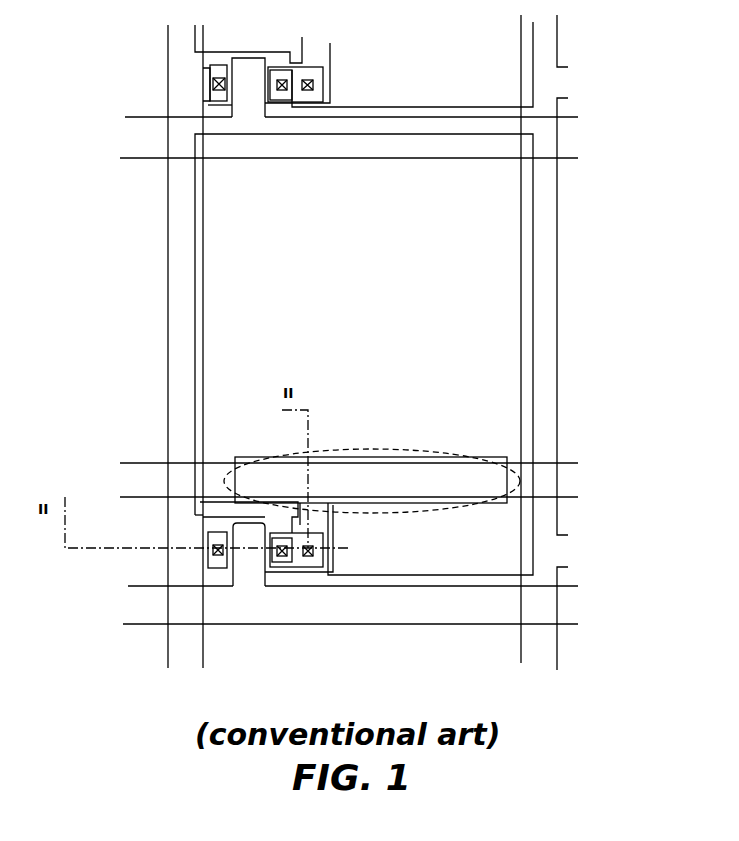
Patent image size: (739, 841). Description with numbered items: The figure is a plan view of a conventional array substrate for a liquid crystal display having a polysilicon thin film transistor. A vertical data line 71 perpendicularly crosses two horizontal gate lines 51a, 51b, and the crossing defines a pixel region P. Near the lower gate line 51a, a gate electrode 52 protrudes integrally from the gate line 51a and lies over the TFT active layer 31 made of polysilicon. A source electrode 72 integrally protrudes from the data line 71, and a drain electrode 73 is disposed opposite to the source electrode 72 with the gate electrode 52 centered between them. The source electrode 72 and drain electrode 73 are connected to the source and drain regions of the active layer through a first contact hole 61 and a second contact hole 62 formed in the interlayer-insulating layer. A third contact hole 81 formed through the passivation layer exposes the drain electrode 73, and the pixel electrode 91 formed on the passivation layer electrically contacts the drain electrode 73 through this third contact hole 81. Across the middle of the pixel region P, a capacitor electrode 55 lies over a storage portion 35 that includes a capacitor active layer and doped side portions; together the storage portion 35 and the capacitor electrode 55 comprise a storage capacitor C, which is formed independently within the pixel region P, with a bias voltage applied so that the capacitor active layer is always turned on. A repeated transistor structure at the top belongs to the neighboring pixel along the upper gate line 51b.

The data line 71 is at (168, 318).
The pixel electrode 91 is at (533, 372).
The gate line 51a is at (420, 626).
The gate line 51b is at (397, 160).
The gate electrode 52 is at (245, 54).
The capacitor electrode 55 is at (348, 458).
The storage capacitor C is at (398, 450).
The storage portion 35 is at (450, 457).
The pixel region P is at (474, 243).
The first contact hole 61 is at (216, 556).
The source electrode 72 is at (223, 573).
The TFT active layer 31 is at (252, 573).
The second contact hole 62 is at (283, 560).
The drain electrode 73 is at (305, 573).
The third contact hole 81 is at (314, 558).